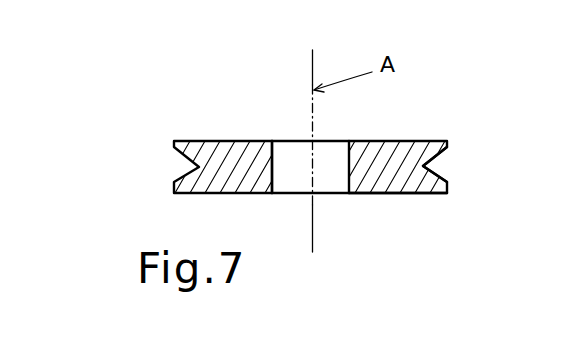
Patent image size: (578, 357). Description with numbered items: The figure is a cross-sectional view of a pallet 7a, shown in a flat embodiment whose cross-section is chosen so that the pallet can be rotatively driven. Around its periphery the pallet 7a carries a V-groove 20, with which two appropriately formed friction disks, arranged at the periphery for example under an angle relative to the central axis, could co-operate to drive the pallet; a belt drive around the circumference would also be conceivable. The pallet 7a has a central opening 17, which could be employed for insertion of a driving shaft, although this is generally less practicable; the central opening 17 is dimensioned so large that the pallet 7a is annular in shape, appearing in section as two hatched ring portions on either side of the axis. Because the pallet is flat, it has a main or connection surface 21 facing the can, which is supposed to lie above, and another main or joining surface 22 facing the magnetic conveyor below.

The main or connection surface 21 is at (213, 140).
The central opening 17 is at (284, 183).
The pallet 7a is at (425, 140).
The V-groove 20 is at (433, 167).
The main or joining surface 22 is at (398, 194).